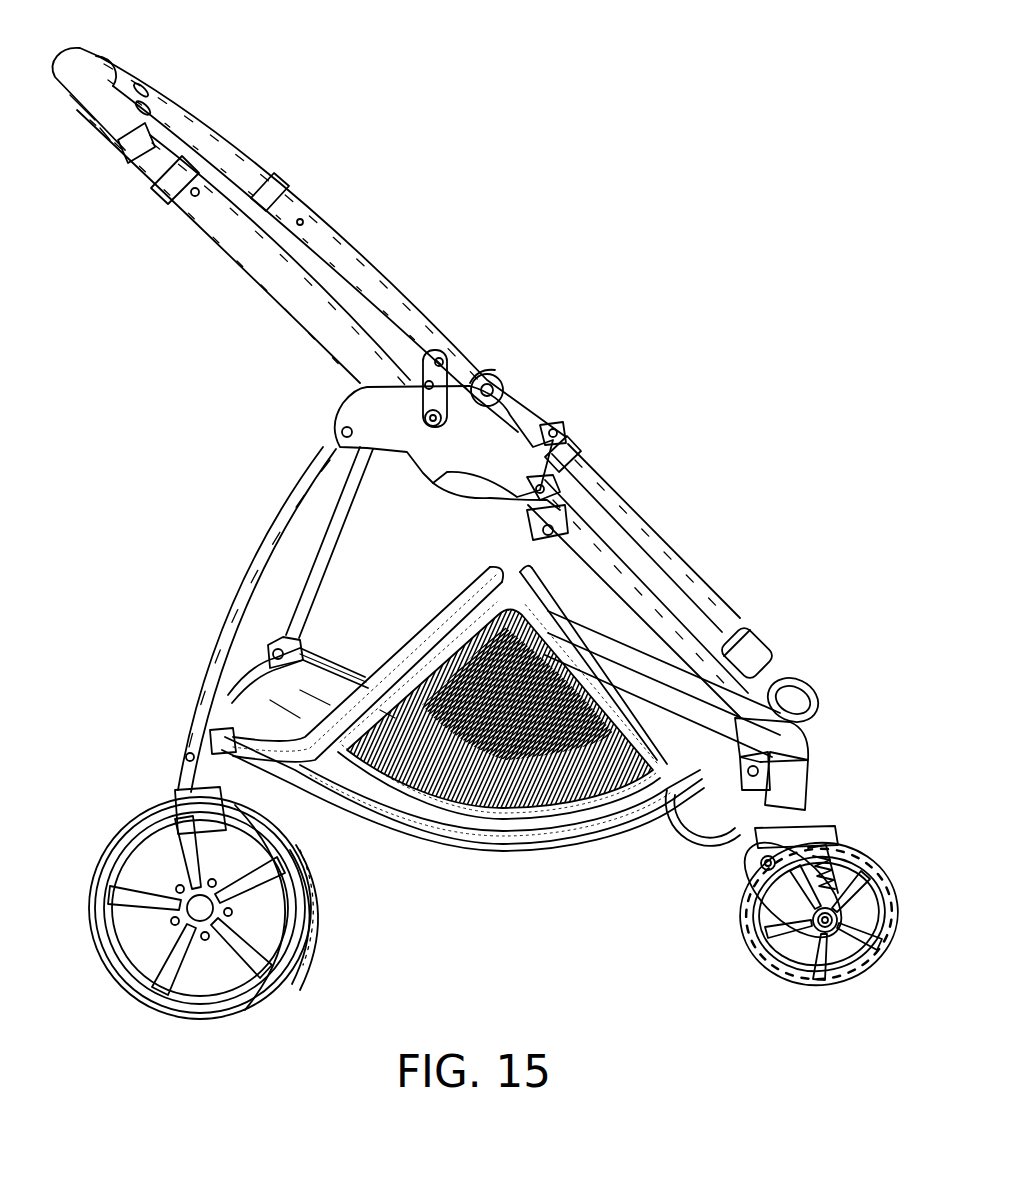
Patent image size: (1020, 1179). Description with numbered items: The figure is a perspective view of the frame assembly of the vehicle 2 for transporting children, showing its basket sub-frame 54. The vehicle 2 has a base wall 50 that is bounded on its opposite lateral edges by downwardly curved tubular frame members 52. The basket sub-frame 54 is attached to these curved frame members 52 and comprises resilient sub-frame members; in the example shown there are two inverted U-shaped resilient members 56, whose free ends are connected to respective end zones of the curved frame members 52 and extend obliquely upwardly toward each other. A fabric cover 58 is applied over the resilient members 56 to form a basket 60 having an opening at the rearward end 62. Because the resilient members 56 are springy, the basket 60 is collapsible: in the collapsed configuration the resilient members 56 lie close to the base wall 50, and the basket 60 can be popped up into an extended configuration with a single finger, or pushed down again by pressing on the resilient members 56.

The vehicle 2 is at (545, 309).
The base wall 50 is at (535, 818).
The curved tubular frame members 52 is at (460, 836).
The basket sub-frame 54 is at (411, 599).
The resilient members 56 is at (608, 548).
The fabric cover 58 is at (443, 660).
The basket 60 is at (620, 644).
The rearward end 62 is at (397, 648).